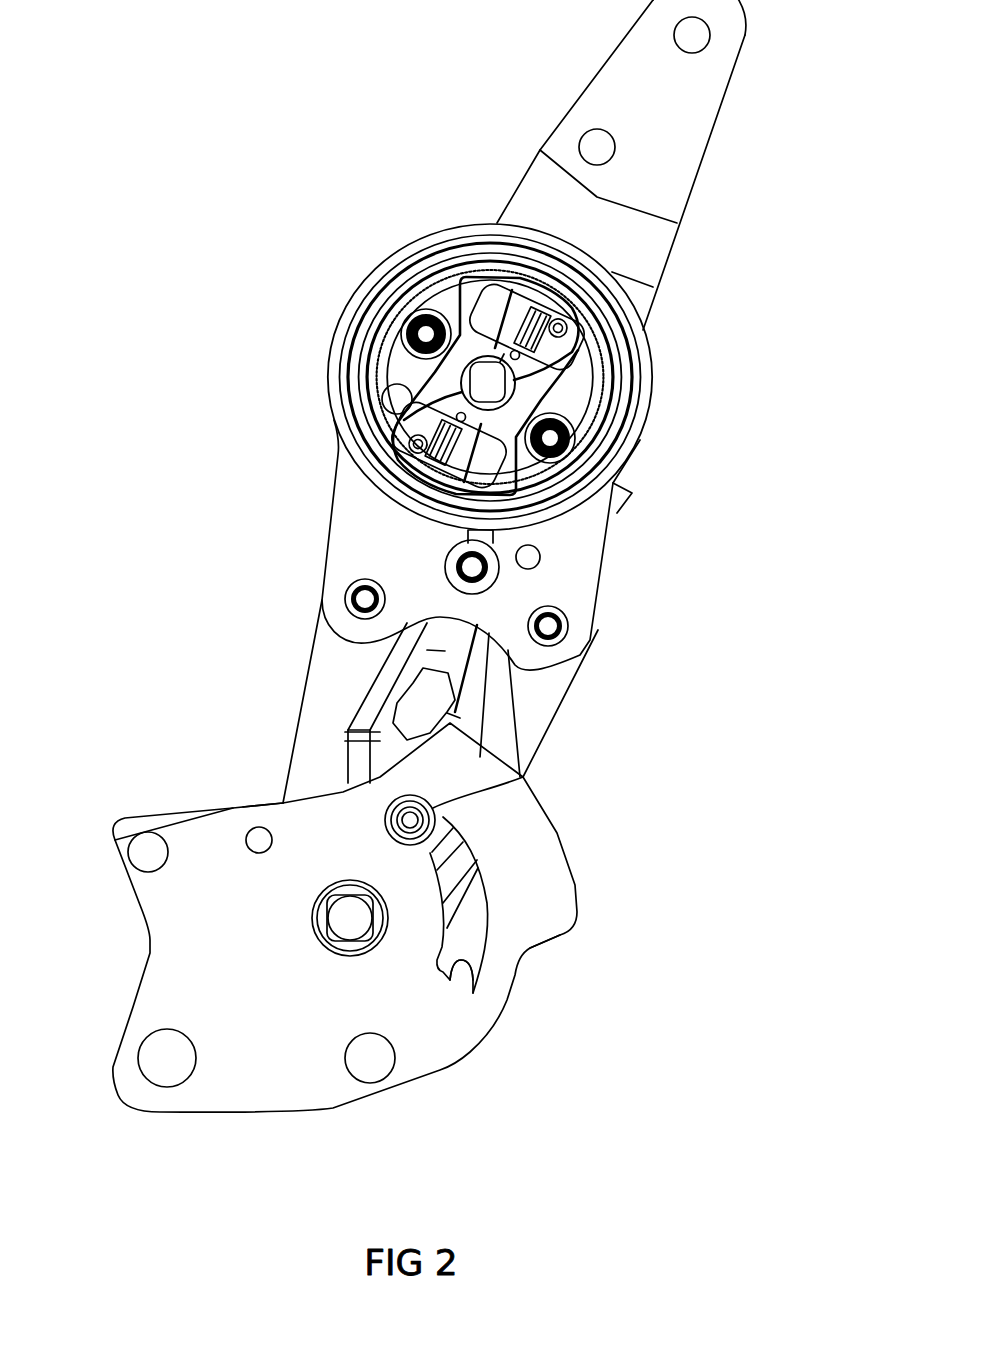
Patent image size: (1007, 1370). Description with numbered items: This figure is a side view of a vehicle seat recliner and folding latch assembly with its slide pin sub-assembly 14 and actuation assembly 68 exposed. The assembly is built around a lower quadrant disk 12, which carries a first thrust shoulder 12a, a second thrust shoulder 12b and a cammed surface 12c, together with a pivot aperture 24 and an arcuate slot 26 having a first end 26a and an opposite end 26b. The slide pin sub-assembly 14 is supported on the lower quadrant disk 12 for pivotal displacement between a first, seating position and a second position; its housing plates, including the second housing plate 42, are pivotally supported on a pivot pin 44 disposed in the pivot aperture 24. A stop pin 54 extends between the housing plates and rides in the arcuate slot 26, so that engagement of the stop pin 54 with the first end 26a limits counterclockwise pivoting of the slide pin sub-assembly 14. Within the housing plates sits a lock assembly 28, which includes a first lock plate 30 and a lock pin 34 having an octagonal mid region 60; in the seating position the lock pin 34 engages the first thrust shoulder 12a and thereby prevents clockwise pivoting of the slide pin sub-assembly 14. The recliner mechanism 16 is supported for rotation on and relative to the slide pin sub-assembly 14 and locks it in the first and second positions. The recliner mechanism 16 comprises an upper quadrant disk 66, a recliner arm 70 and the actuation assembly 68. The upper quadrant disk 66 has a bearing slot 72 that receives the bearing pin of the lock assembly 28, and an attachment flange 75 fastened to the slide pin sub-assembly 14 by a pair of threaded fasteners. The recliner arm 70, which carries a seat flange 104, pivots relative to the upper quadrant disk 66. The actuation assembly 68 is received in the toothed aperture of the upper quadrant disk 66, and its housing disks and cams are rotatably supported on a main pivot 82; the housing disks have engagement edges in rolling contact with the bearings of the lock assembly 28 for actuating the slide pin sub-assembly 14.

The lower quadrant disk 12 is at (373, 917).
The first thrust shoulder 12a is at (382, 748).
The second thrust shoulder 12b is at (557, 933).
The cammed surface 12c is at (557, 832).
The slide pin sub-assembly 14 is at (455, 697).
The recliner mechanism 16 is at (539, 377).
The pivot aperture 24 is at (343, 879).
The arcuate slot 26 is at (364, 915).
The first end 26a is at (393, 840).
The lever second end 26b is at (452, 965).
The lock assembly 28 is at (478, 679).
The first lock plate 30 is at (435, 647).
The lock pin 34 is at (410, 693).
The second housing plate 42 is at (318, 721).
The pivot pin 44 is at (348, 926).
The stop pin 54 is at (425, 812).
The octagonal mid region 60 is at (447, 713).
The upper quadrant disk 66 is at (468, 545).
The actuation assembly 68 is at (405, 365).
The recliner arm 70 is at (680, 165).
The bearing slot 72 is at (472, 533).
The attachment flange 75 is at (585, 565).
The main pivot 82 is at (493, 382).
The seat flange 104 is at (725, 44).